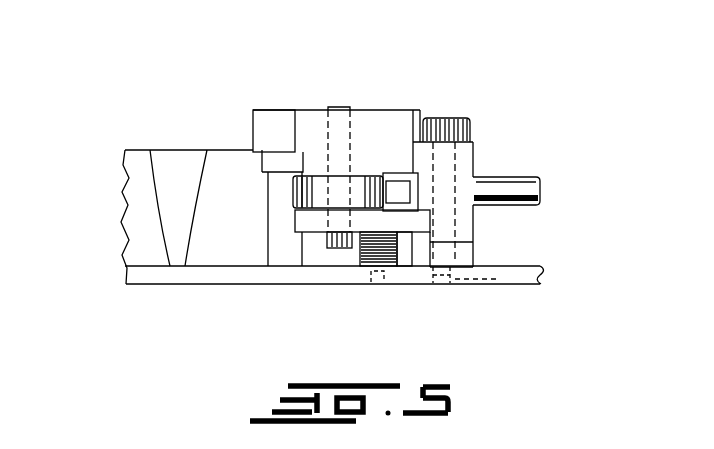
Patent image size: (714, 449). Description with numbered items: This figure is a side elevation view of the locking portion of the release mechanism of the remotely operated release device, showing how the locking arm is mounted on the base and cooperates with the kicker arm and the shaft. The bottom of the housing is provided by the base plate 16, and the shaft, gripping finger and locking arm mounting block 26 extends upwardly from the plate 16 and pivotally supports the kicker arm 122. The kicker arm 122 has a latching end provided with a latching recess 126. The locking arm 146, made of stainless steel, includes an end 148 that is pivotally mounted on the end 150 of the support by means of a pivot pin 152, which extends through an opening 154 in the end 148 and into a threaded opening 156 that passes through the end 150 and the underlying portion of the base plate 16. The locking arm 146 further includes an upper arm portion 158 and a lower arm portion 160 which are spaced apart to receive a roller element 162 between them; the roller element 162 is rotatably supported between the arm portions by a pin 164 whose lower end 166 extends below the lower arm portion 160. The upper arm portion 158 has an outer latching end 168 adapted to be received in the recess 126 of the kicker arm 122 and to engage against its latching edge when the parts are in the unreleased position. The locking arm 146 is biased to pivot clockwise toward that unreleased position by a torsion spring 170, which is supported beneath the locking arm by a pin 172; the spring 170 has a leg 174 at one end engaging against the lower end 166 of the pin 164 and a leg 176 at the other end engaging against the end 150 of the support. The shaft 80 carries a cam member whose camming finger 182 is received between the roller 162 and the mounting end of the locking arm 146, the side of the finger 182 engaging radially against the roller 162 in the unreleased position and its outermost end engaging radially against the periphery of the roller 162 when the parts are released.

The plate 16 is at (528, 264).
The shaft, gripping finger and locking arm mounting block 26 is at (140, 140).
The shaft 80 is at (525, 177).
The kicker arm 122 is at (240, 124).
The latching recess 126 is at (277, 140).
The locking arm 146 is at (432, 83).
The end 148 is at (438, 122).
The end 150 is at (475, 250).
The pivot pin 152 is at (470, 102).
The opening 154 is at (458, 172).
The threaded opening 156 is at (460, 279).
The upper arm portion 158 is at (308, 127).
The lower arm portion 160 is at (295, 217).
The roller element 162 is at (293, 192).
The pin 164 is at (355, 127).
The lower end 166 is at (327, 246).
The outer latching end 168 is at (300, 109).
The torsion spring 170 is at (355, 274).
The pin 172 is at (390, 285).
The leg 174 is at (336, 249).
The leg 176 is at (430, 277).
The camming finger 182 is at (398, 191).